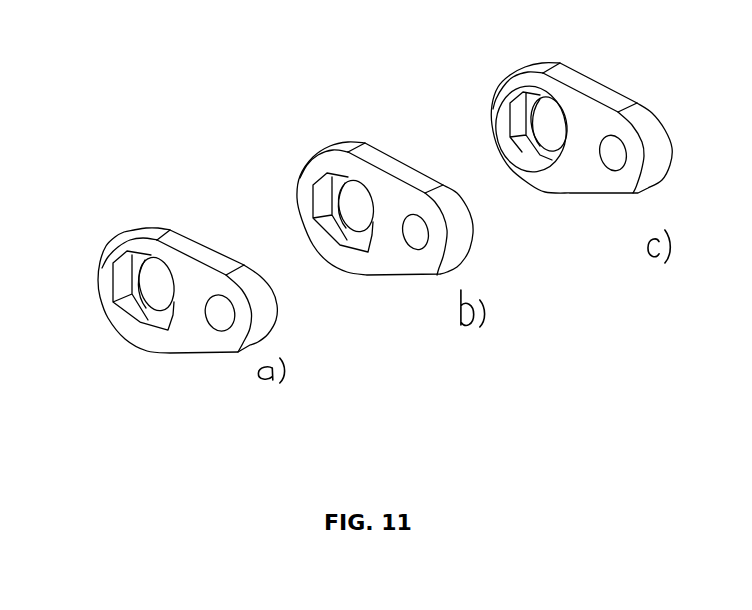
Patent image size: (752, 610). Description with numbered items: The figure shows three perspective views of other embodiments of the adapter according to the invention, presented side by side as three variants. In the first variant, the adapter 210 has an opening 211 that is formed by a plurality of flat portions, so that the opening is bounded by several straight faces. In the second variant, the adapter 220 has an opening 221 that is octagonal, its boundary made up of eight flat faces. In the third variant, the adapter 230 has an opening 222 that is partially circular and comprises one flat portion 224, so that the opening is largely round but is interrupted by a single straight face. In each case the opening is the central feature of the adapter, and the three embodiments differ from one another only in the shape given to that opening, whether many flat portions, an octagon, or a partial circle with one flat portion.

The adapter 210 is at (145, 228).
The opening 211 is at (123, 284).
The adapter 220 is at (343, 142).
The opening 221 is at (320, 203).
The adapter 230 is at (602, 12).
The opening 222 is at (535, 155).
The flat portion 224 is at (508, 108).